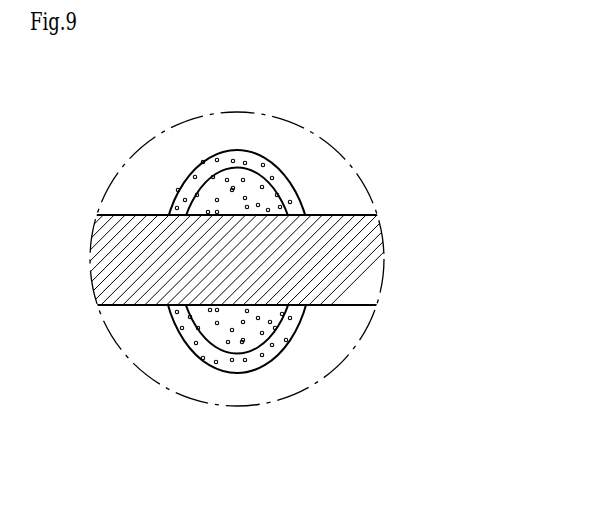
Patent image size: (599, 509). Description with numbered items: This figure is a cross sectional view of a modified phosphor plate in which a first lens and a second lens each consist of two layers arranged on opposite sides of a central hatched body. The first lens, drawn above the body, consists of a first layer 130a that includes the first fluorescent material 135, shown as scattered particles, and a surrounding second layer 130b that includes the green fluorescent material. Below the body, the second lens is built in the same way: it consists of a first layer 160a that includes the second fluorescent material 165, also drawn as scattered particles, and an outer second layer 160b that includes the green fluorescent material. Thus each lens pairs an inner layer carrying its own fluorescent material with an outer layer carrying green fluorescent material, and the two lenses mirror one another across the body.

The first layer 130a is at (285, 187).
The second layer 130b is at (268, 160).
The first fluorescent material 135 is at (197, 195).
The first layer 160a is at (277, 315).
The second layer 160b is at (272, 358).
The second fluorescent material 165 is at (185, 347).